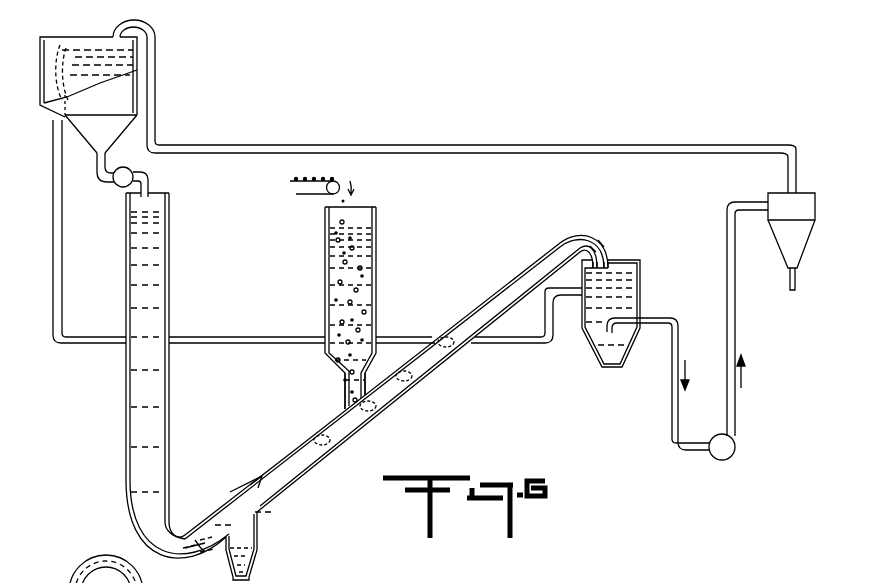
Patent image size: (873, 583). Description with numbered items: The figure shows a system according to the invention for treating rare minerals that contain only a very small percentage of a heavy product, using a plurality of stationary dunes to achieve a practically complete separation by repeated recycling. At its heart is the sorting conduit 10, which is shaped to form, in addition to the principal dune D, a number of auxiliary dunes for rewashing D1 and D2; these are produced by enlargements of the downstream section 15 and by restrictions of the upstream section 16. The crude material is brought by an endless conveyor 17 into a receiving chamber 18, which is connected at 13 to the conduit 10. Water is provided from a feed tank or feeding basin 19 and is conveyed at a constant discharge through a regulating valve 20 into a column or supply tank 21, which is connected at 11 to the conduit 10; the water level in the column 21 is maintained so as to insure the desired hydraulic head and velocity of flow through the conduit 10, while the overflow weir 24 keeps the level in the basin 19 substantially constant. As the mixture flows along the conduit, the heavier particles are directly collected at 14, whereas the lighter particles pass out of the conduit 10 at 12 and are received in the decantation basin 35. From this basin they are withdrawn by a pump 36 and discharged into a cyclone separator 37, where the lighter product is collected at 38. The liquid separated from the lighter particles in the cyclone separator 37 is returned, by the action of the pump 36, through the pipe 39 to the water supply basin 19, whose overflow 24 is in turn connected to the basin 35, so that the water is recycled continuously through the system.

The sorting conduit 10 is at (316, 434).
The water admission point 11 is at (205, 538).
The discharge point for lighter particles 12 is at (603, 252).
The crude material admission point 13 is at (345, 382).
The heavier particle discharge 14 is at (258, 540).
The downstream section 15 is at (504, 283).
The upstream section 16 is at (286, 457).
The endless conveyor 17 is at (311, 195).
The receiving chamber 18 is at (326, 270).
The feed tank 19 is at (113, 128).
The regulating valve 20 is at (130, 171).
The supply tank column 21 is at (166, 286).
The overflow weir 24 is at (62, 45).
The decantation basin 35 is at (640, 302).
The pump 36 is at (735, 449).
The cyclone separator 37 is at (773, 193).
The collection point 38 is at (778, 238).
The pipe 39 is at (388, 145).
The principal dune D is at (370, 414).
The auxiliary dune D1 is at (410, 384).
The auxiliary dune D2 is at (322, 450).